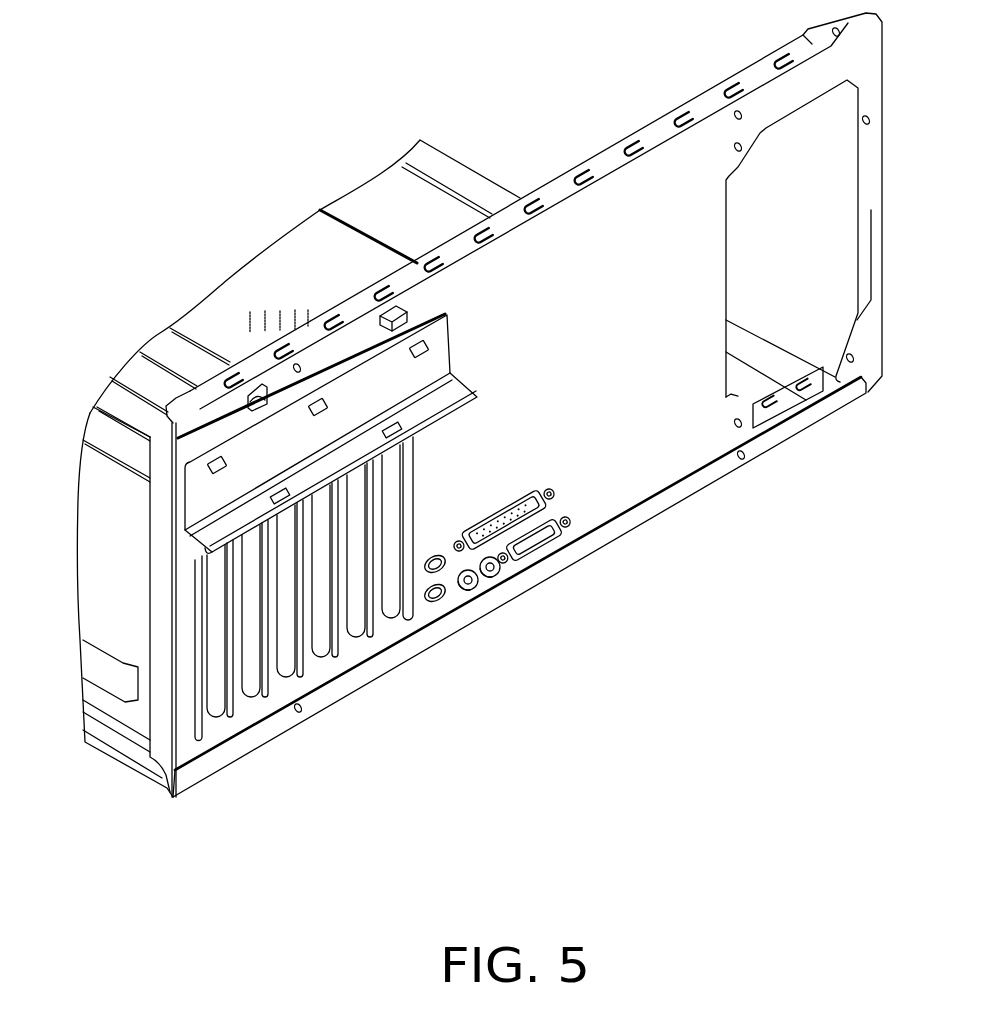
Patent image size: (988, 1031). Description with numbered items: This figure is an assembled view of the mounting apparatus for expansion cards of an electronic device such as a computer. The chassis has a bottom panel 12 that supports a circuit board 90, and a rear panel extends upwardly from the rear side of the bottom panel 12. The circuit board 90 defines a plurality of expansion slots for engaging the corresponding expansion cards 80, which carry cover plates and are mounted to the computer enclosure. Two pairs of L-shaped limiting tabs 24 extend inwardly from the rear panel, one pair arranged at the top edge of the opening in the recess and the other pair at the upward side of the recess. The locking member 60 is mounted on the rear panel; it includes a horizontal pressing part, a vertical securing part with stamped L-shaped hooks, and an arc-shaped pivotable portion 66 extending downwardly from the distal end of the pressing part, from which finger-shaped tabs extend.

The bottom panel 12 is at (423, 207).
The L-shaped limiting tabs 24 is at (389, 305).
The locking member 60 is at (203, 487).
The pivotable portion 66 is at (223, 545).
The expansion cards 80 is at (157, 360).
The circuit board 90 is at (273, 257).